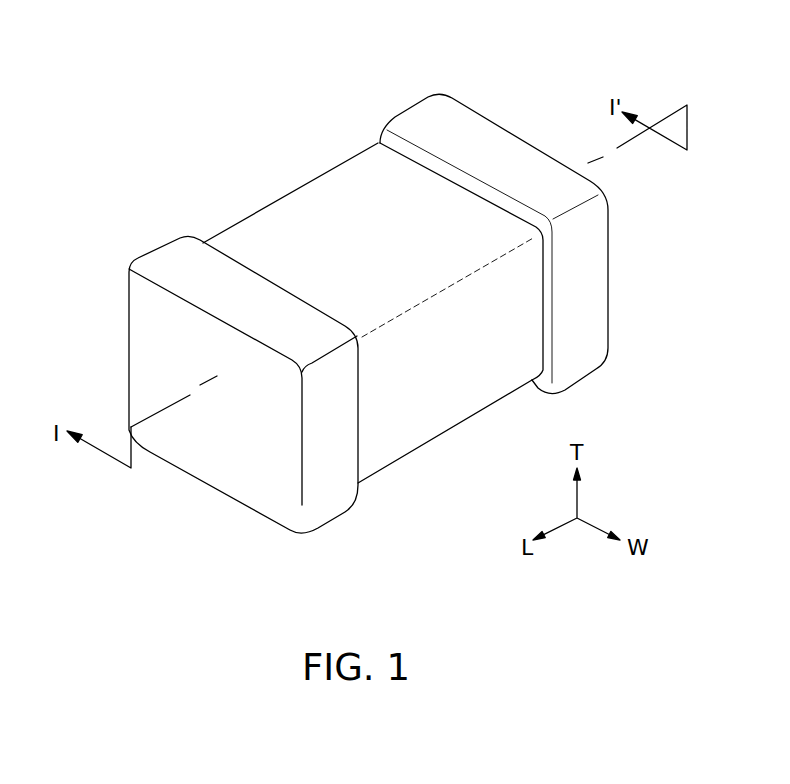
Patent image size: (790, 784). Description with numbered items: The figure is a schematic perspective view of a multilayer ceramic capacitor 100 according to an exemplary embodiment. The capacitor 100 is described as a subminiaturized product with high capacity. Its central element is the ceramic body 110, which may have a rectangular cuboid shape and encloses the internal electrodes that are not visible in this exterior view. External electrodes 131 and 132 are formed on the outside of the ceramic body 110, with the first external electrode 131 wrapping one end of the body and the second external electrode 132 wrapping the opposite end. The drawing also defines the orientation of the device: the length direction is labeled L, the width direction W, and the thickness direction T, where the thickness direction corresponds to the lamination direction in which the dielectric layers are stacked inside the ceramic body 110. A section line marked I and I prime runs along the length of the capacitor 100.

The multilayer ceramic capacitor 100 is at (222, 36).
The ceramic body 110 is at (312, 200).
The first external electrode 131 is at (167, 260).
The second external electrode 132 is at (415, 117).